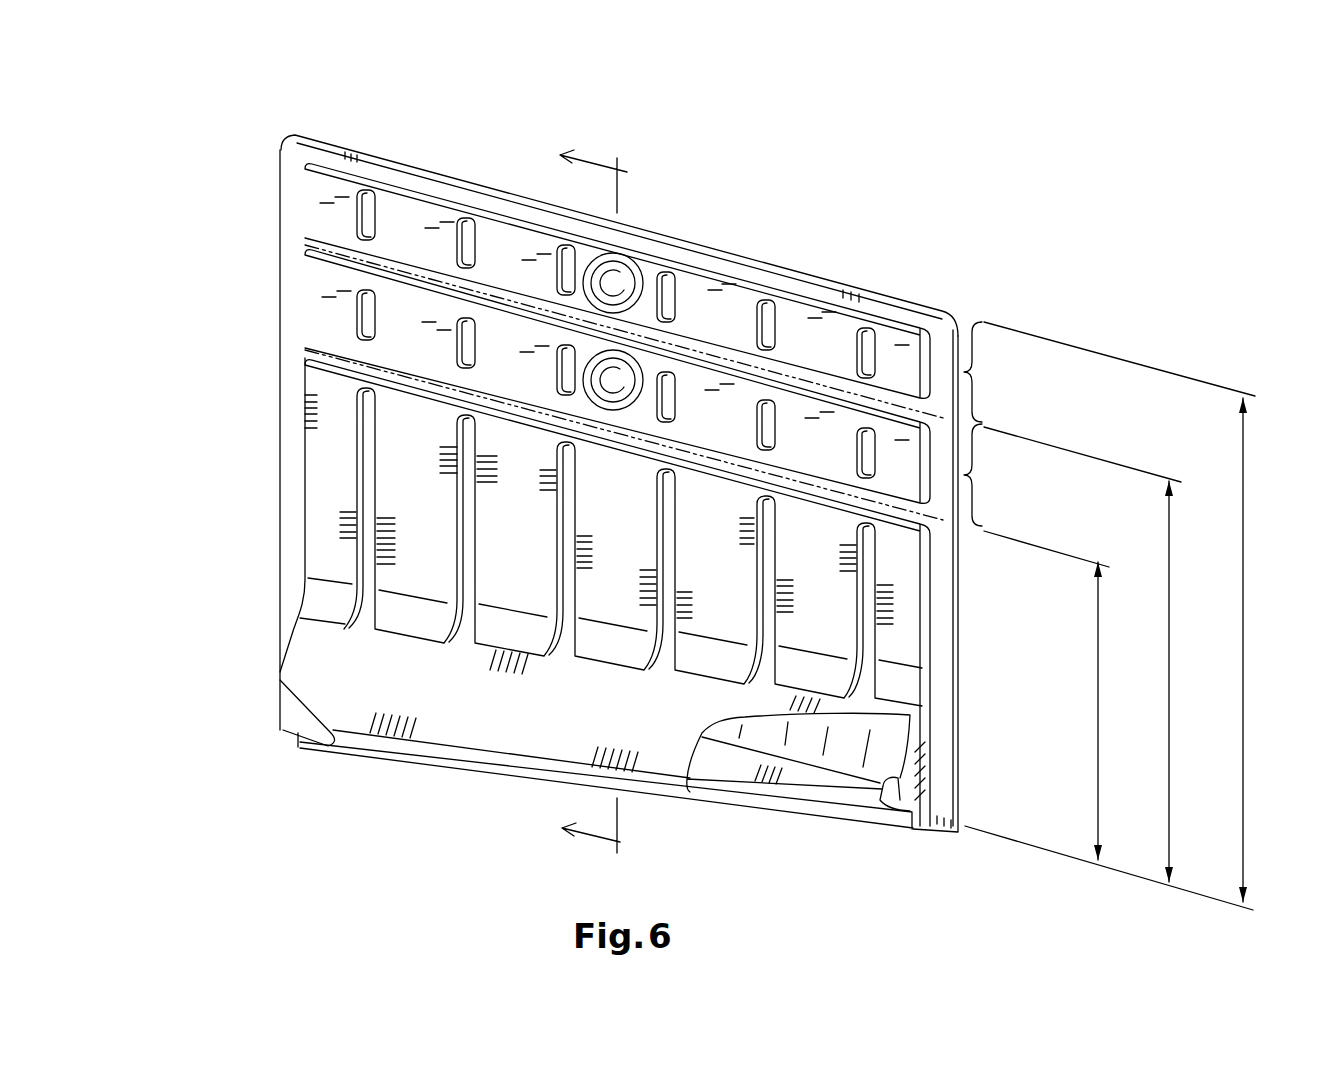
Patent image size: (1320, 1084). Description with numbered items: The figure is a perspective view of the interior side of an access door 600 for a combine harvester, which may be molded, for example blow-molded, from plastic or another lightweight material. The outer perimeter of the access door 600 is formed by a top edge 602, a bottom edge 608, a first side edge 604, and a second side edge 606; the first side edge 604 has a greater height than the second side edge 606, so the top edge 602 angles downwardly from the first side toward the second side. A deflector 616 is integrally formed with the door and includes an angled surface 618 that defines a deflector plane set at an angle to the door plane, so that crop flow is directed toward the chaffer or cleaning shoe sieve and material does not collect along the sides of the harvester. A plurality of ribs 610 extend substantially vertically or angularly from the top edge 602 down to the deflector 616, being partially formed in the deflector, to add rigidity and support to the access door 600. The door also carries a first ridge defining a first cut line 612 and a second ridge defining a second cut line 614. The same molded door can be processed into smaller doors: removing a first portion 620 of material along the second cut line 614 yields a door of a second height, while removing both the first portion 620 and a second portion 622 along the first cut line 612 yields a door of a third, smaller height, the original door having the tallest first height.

The access door 600 is at (916, 143).
The top edge 602 is at (720, 250).
The first side edge 604 is at (277, 503).
The second side edge 606 is at (962, 577).
The bottom edge 608 is at (467, 768).
The plurality of ribs 610 is at (467, 487).
The first cut line 612 is at (306, 340).
The second cut line 614 is at (306, 237).
The deflector 616 is at (315, 658).
The angled surface 618 is at (543, 724).
The first portion 620 is at (999, 372).
The second portion 622 is at (999, 475).